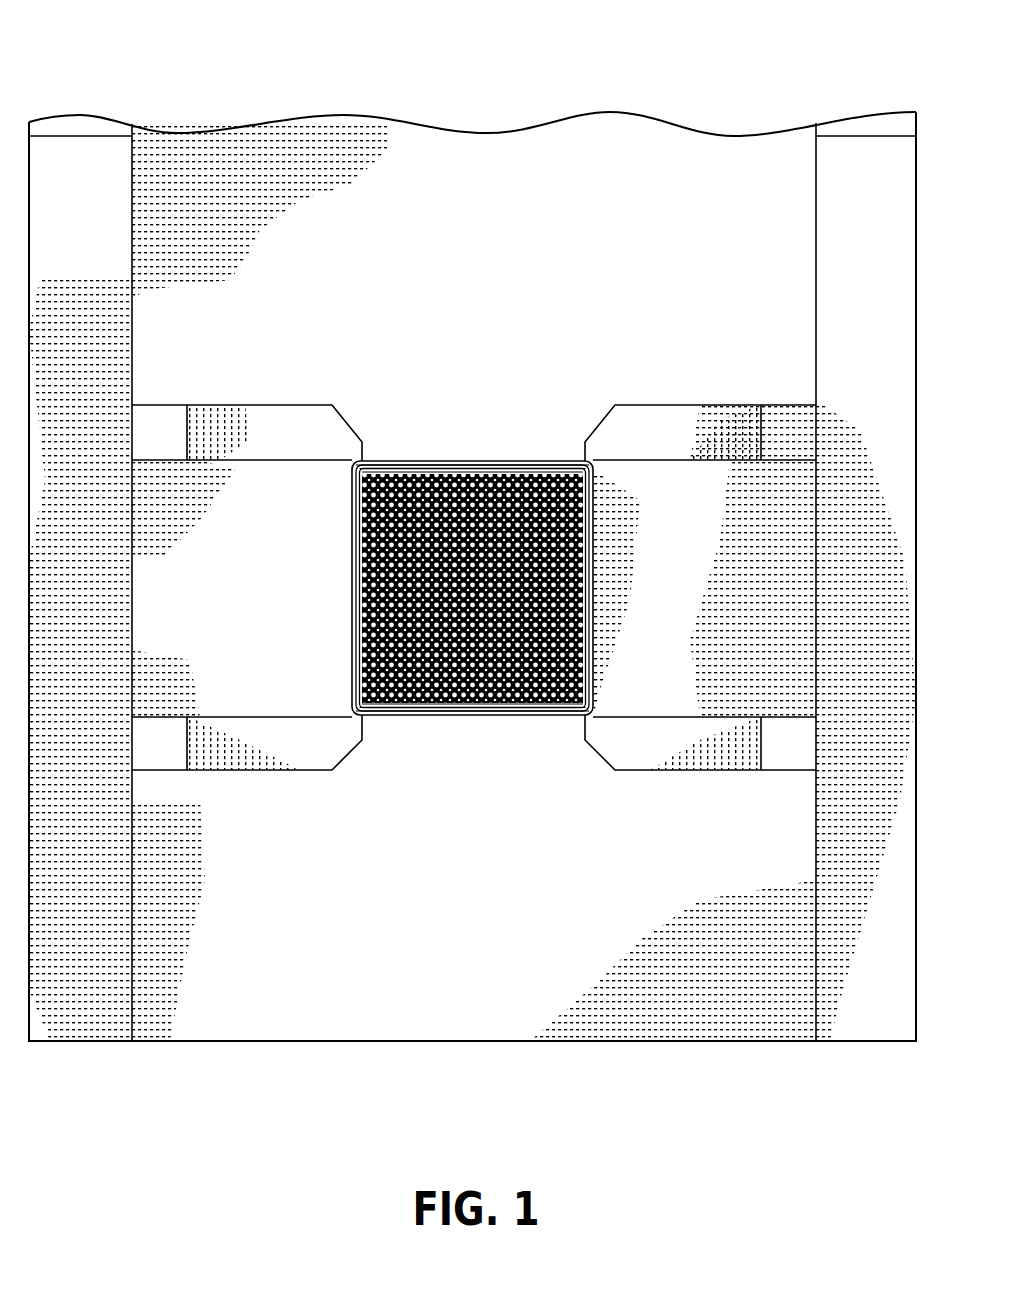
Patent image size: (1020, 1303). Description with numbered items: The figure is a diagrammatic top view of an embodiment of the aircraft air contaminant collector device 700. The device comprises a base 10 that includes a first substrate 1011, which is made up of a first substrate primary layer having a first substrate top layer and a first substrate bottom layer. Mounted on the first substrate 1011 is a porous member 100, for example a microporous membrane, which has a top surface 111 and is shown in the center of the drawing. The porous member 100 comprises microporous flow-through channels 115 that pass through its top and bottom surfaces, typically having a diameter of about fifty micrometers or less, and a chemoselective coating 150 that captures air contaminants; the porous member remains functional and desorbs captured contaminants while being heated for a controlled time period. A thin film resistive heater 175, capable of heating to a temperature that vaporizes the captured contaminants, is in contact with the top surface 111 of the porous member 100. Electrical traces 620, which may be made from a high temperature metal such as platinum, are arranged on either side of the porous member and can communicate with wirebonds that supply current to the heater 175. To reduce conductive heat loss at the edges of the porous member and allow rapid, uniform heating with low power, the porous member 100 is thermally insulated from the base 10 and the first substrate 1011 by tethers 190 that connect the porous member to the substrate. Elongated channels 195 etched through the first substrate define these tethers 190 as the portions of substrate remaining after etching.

The aircraft air contaminant collector device 700 is at (211, 73).
The base 10 is at (252, 1010).
The first substrate 1011 is at (474, 583).
The porous member 100 is at (459, 550).
The electrical traces 620 is at (540, 463).
The tethers 190 is at (387, 463).
The thin film resistive heater 175 is at (424, 463).
The channels 195 is at (503, 463).
The chemoselective coating 150 is at (380, 707).
The microporous flow-through channels 115 is at (455, 705).
The top surface 111 is at (563, 705).